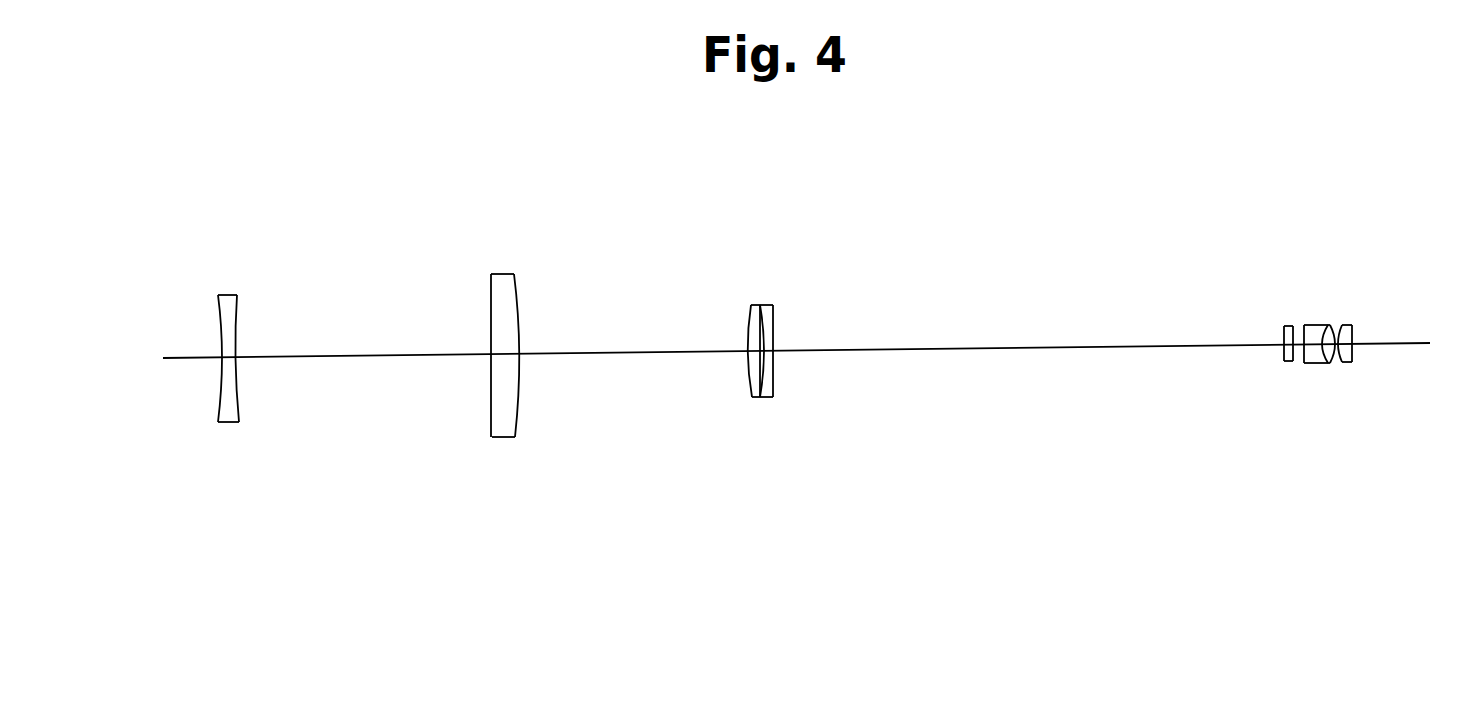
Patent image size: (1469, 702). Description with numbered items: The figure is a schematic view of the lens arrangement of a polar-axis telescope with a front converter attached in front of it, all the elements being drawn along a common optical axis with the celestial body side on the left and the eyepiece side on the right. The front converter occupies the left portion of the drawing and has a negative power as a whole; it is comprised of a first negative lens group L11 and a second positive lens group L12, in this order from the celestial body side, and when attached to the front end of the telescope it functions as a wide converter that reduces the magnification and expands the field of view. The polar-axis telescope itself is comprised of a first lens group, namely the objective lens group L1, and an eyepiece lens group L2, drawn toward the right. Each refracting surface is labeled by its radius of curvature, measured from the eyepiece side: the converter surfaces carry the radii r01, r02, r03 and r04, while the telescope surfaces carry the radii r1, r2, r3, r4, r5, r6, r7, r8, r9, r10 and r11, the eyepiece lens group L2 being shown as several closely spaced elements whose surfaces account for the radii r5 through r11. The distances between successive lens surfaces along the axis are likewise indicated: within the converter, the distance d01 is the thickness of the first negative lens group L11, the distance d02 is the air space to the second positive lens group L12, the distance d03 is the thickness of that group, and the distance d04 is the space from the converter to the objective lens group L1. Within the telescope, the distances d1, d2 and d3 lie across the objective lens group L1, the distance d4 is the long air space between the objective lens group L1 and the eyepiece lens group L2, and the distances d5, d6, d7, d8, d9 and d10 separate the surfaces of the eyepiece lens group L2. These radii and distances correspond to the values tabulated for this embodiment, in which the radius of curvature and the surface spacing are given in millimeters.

The first negative lens group L11 is at (247, 389).
The second positive lens group L12 is at (521, 391).
The first lens group (objective lens group) L1 is at (790, 407).
The eyepiece lens group L2 is at (1369, 395).
The radius of curvature r01 is at (218, 295).
The radius of curvature r02 is at (237, 295).
The radius of curvature r03 is at (491, 274).
The radius of curvature r04 is at (514, 274).
The radius of curvature r1 is at (751, 305).
The radius of curvature r2 is at (760, 305).
The radius of curvature r3 is at (787, 302).
The radius of curvature r4 is at (765, 304).
The radius of curvature r5 is at (1284, 326).
The radius of curvature r6 is at (1293, 326).
The radius of curvature r7 is at (1326, 283).
The radius of curvature r8 is at (1324, 325).
The radius of curvature r9 is at (1367, 283).
The radius of curvature r10 is at (1341, 325).
The radius of curvature r11 is at (1408, 282).
The distance between lens surfaces d01 is at (229, 422).
The distance between lens surfaces d02 is at (365, 356).
The distance between lens surfaces d03 is at (504, 354).
The distance between lens surfaces d04 is at (647, 352).
The distance between lens surfaces d1 is at (758, 397).
The distance between lens surfaces d2 is at (782, 429).
The distance between lens surfaces d3 is at (774, 353).
The distance between lens surfaces d4 is at (1031, 347).
The distance between lens surfaces d5 is at (1288, 361).
The distance between lens surfaces d6 is at (1313, 430).
The distance between lens surfaces d7 is at (1336, 415).
The distance between lens surfaces d8 is at (1356, 430).
The distance between lens surfaces d9 is at (1376, 415).
The distance between lens surfaces d10 is at (1405, 430).